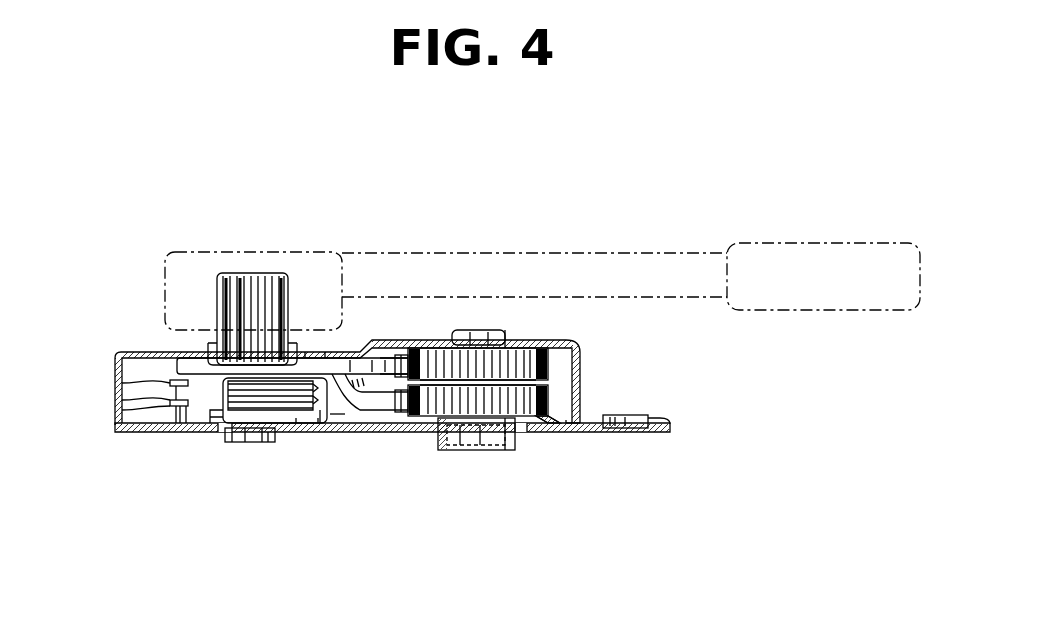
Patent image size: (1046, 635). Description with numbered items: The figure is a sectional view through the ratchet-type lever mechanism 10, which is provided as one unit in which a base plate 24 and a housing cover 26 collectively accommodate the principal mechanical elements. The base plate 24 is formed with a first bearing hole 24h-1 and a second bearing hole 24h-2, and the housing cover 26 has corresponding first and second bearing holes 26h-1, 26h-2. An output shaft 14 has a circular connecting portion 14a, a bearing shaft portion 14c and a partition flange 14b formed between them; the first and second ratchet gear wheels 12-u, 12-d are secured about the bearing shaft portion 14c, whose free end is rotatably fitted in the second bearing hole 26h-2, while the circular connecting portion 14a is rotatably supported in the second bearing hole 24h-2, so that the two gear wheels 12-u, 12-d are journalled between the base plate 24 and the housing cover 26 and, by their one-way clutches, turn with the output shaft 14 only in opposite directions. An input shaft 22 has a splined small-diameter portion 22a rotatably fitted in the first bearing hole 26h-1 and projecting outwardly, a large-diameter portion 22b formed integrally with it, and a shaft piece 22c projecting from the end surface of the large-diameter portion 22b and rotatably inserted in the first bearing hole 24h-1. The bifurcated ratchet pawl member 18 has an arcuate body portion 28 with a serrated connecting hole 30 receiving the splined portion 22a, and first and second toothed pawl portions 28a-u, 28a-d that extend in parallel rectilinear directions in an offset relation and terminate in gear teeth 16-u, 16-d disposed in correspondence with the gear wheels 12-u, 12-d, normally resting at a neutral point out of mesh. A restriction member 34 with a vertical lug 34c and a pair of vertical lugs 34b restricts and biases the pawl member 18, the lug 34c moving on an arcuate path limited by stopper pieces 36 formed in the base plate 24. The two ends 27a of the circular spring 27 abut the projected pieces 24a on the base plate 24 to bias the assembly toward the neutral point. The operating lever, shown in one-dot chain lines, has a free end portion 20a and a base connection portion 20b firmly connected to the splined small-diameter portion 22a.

The ratchet-type lever mechanism 10 is at (663, 168).
The first ratchet gear wheel 12-u is at (547, 363).
The second ratchet gear wheel 12-d is at (547, 398).
The output shaft 14 is at (503, 330).
The circular connecting portion 14a is at (490, 446).
The partition flange 14b is at (555, 433).
The bearing shaft portion 14c is at (488, 330).
The gear teeth 16-u is at (409, 356).
The gear teeth 16-d is at (412, 413).
The bifurcated ratchet pawl member 18 is at (337, 409).
The free end portion 20a is at (688, 260).
The base connection portion 20b is at (175, 248).
The input shaft 22 is at (233, 274).
The splined small-diameter portion 22a is at (254, 272).
The large-diameter portion 22b is at (237, 437).
The shaft piece 22c is at (257, 442).
The base plate 24 is at (128, 432).
The projected piece 24a is at (170, 403).
The first bearing hole 24h-1 is at (225, 404).
The second bearing hole 24h-2 is at (518, 437).
The housing cover 26 is at (117, 352).
The first bearing hole 26h-1 is at (315, 372).
The second bearing hole 26h-2 is at (507, 334).
The circular spring 27 is at (157, 432).
The end of circular spring 27a is at (170, 383).
The body portion 28 is at (190, 360).
The first toothed pawl portion 28a-u is at (385, 357).
The second toothed pawl portion 28a-d is at (383, 413).
The connecting hole 30 is at (215, 352).
The restriction member 34 is at (326, 374).
The vertical lugs 34b is at (207, 418).
The vertical lug 34c is at (323, 421).
The stopper pieces 36 is at (308, 432).